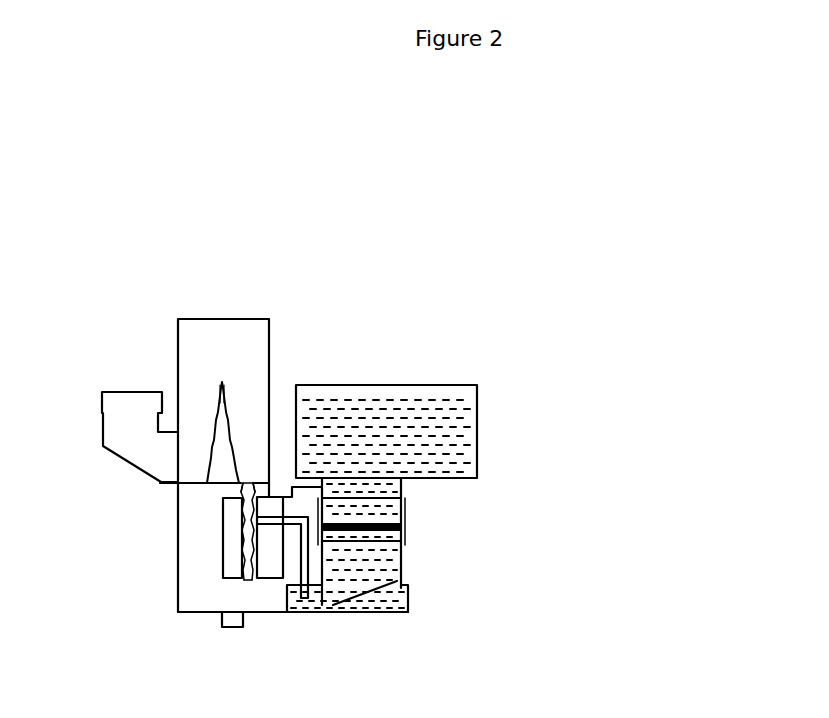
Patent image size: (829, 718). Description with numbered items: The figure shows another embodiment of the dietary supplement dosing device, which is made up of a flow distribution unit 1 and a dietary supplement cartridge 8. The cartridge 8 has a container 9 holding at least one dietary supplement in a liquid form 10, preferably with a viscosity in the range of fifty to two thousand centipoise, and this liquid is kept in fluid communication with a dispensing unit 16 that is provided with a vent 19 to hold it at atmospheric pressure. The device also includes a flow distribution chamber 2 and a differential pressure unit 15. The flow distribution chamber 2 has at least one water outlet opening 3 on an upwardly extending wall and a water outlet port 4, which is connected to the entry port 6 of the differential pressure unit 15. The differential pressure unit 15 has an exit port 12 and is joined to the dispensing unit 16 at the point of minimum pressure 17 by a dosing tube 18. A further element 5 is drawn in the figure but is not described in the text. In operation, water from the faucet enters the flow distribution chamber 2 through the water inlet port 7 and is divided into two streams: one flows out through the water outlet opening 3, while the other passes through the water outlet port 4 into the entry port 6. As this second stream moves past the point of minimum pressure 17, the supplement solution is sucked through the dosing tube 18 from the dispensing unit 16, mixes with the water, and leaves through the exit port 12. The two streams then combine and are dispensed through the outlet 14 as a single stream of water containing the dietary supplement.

The flow distribution unit 1 is at (178, 319).
The flow distribution chamber 2 is at (200, 352).
The water outlet opening 3 is at (220, 463).
The water outlet port 4 is at (250, 480).
The burner plate 5 is at (247, 492).
The entry port 6 is at (242, 502).
The water inlet port 7 is at (118, 402).
The dietary supplement cartridge 8 is at (462, 320).
The container 9 is at (473, 385).
The dietary supplement in liquid form 10 is at (442, 410).
The exit port 12 is at (245, 577).
The outlet 14 is at (243, 623).
The differential pressure unit 15 is at (237, 555).
The dispensing unit 16 is at (408, 596).
The point of minimum pressure 17 is at (245, 522).
The dosing tube 18 is at (313, 541).
The vent 19 is at (313, 488).